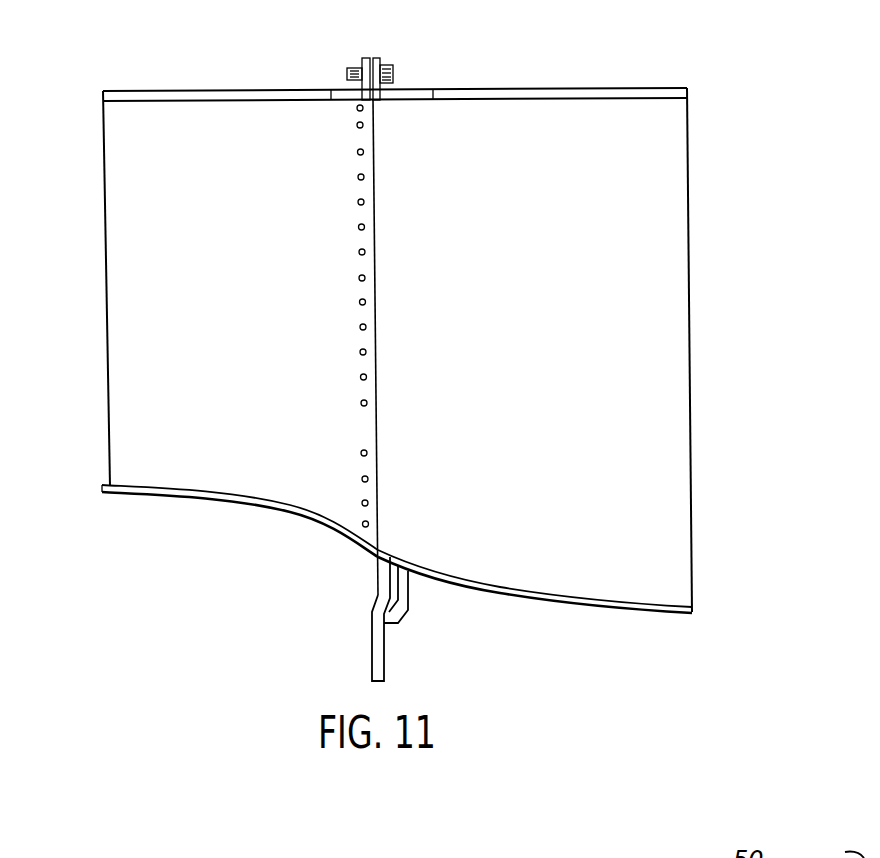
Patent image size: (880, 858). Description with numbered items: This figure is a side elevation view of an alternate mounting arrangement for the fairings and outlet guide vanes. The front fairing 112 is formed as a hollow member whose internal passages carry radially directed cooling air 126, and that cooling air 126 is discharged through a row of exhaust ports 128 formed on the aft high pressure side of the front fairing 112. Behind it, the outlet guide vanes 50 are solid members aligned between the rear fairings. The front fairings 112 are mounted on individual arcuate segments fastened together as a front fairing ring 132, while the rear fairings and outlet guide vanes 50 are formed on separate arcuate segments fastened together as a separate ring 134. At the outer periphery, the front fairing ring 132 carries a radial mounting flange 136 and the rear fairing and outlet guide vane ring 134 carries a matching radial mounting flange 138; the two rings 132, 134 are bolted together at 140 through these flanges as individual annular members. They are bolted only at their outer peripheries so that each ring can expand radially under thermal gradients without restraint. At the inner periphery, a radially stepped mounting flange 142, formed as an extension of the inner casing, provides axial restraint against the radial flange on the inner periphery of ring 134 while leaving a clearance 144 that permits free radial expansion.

The outlet guide vane 50 is at (682, 240).
The front fairing 112 is at (135, 218).
The cooling air 126 is at (226, 120).
The exhaust ports 128 is at (362, 503).
The front fairing ring 132 is at (255, 93).
The rear fairing and outlet guide vane ring 134 is at (645, 88).
The radial mounting flange 136 is at (364, 58).
The radial mounting flange 138 is at (376, 58).
The bolt 140 is at (389, 71).
The radially stepped mounting flange 142 is at (403, 580).
The clearance 144 is at (372, 604).